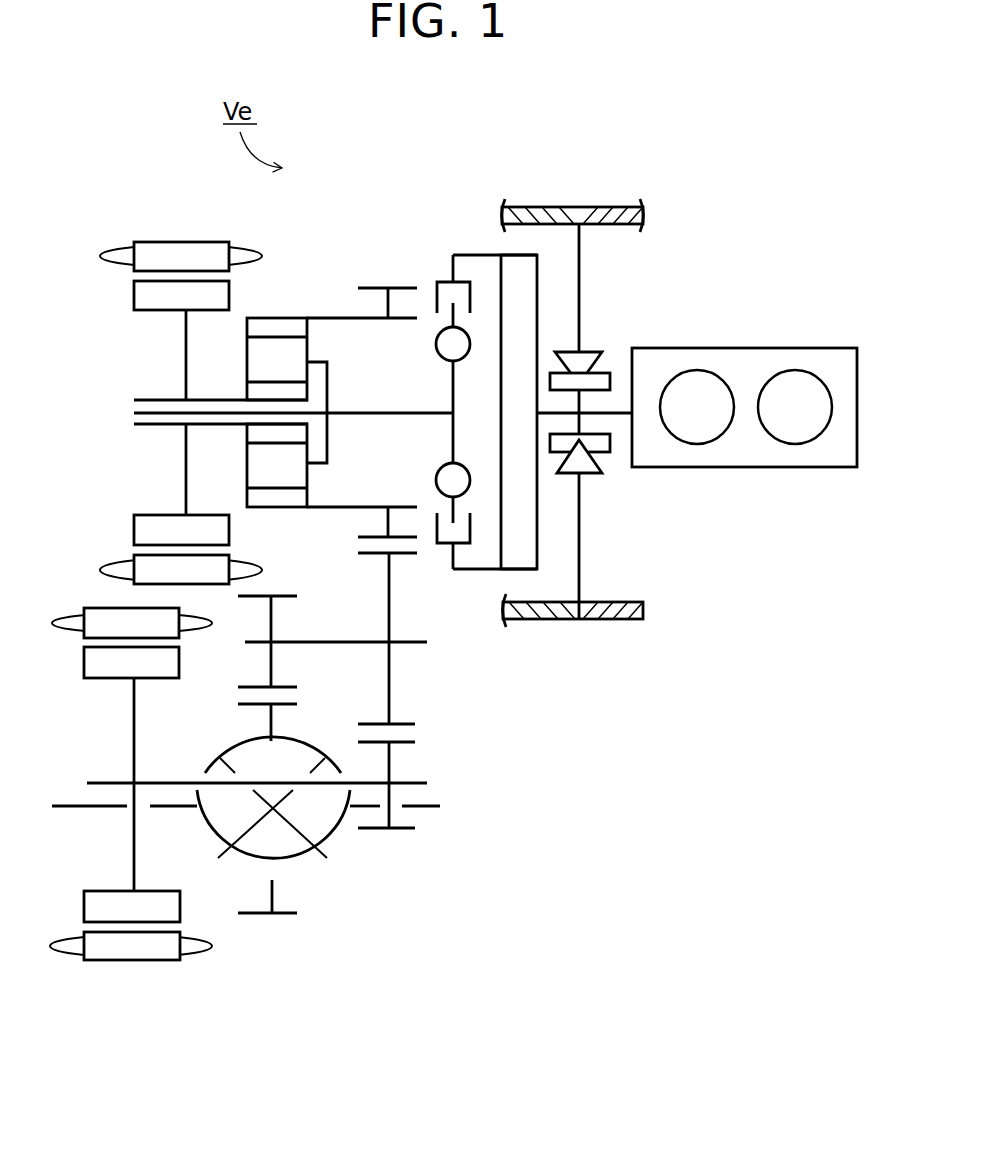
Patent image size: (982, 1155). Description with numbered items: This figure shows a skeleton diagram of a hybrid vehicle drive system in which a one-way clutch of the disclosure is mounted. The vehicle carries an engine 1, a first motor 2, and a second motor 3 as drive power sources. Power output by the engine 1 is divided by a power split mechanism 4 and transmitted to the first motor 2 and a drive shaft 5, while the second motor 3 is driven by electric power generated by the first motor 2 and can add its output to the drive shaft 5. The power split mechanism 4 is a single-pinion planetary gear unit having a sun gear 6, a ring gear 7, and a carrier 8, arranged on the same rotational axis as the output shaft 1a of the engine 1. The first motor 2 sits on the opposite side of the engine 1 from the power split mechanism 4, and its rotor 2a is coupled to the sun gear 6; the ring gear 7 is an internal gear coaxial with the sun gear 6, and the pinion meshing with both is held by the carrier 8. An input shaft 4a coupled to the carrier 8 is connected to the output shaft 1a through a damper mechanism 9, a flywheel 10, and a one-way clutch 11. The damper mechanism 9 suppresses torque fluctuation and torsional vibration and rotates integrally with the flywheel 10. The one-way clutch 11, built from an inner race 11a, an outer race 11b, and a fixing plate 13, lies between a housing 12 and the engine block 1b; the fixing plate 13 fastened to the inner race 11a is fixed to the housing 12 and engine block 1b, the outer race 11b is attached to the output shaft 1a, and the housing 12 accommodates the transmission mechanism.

The engine 1 is at (752, 460).
The output shaft 1a is at (618, 415).
The engine block 1b is at (608, 212).
The first motor 2 is at (97, 328).
The rotor 2a is at (158, 523).
The second motor 3 is at (82, 722).
The power split mechanism 4 is at (332, 280).
The input shaft 4a is at (392, 415).
The drive shaft 5 is at (432, 806).
The sun gear 6 is at (253, 433).
The ring gear 7 is at (258, 327).
The carrier 8 is at (332, 378).
The damper mechanism 9 is at (443, 260).
The flywheel 10 is at (520, 262).
The one-way clutch 11 is at (657, 262).
The inner race 11a is at (590, 473).
The outer race 11b is at (597, 373).
The housing 12 is at (547, 213).
The fixing plate 13 is at (582, 563).